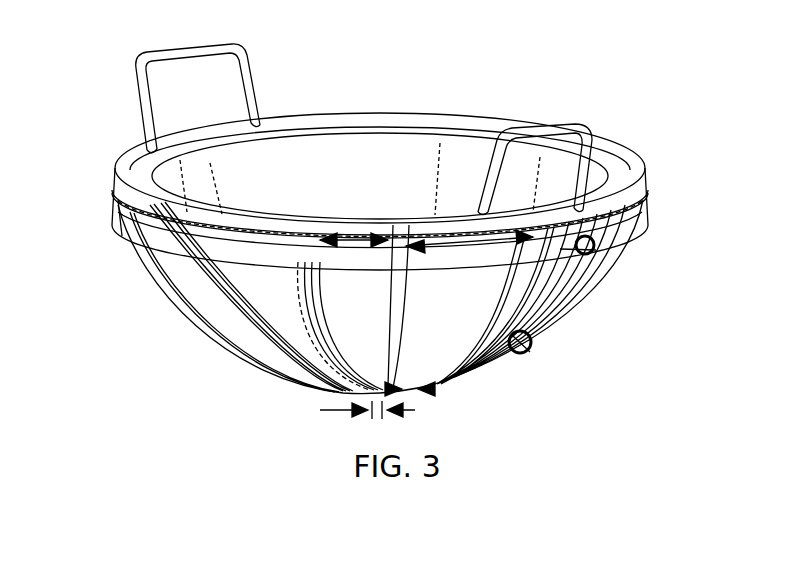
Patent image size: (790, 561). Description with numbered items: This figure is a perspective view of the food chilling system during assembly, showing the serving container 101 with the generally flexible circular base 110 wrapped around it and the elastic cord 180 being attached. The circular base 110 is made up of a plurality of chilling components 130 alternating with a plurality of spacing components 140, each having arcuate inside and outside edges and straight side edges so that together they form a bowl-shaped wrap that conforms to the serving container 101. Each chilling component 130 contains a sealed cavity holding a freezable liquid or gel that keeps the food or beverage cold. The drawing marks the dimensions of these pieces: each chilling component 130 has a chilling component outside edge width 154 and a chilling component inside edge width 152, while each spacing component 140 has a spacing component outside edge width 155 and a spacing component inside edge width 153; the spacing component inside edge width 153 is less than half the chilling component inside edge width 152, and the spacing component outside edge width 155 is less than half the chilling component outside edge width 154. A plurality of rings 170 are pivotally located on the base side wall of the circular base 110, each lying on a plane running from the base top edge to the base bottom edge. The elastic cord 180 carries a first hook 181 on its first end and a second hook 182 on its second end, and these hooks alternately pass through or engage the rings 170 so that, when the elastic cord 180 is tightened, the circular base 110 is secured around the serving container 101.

The serving container 101 is at (404, 116).
The circular base 110 is at (220, 380).
The chilling component 130 is at (613, 262).
The spacing component 140 is at (197, 278).
The chilling component inside edge width 152 is at (420, 392).
The spacing component inside edge width 153 is at (337, 412).
The chilling component outside edge width 154 is at (463, 240).
The spacing component outside edge width 155 is at (354, 238).
The ring 170 is at (596, 232).
The elastic cord 180 is at (128, 231).
The first hook 181 is at (596, 250).
The second hook 182 is at (512, 352).